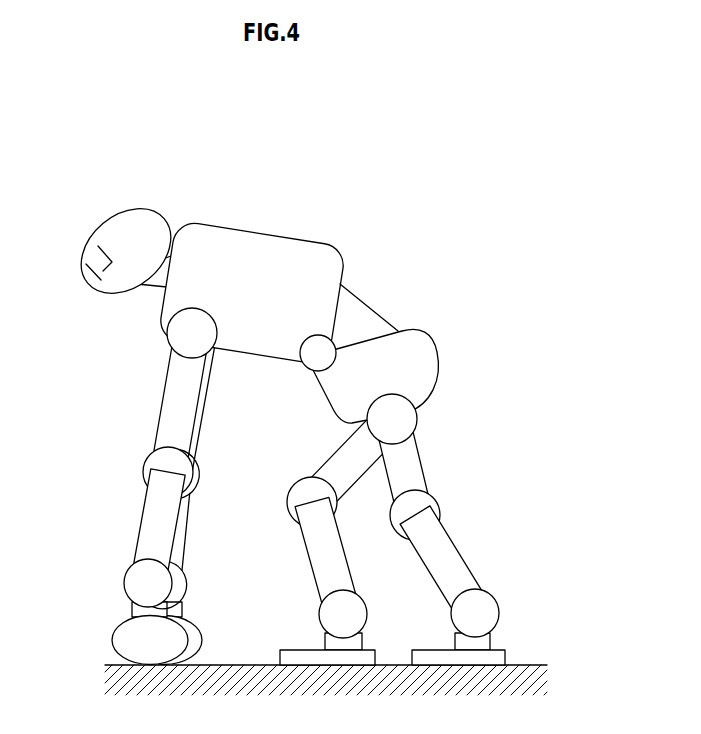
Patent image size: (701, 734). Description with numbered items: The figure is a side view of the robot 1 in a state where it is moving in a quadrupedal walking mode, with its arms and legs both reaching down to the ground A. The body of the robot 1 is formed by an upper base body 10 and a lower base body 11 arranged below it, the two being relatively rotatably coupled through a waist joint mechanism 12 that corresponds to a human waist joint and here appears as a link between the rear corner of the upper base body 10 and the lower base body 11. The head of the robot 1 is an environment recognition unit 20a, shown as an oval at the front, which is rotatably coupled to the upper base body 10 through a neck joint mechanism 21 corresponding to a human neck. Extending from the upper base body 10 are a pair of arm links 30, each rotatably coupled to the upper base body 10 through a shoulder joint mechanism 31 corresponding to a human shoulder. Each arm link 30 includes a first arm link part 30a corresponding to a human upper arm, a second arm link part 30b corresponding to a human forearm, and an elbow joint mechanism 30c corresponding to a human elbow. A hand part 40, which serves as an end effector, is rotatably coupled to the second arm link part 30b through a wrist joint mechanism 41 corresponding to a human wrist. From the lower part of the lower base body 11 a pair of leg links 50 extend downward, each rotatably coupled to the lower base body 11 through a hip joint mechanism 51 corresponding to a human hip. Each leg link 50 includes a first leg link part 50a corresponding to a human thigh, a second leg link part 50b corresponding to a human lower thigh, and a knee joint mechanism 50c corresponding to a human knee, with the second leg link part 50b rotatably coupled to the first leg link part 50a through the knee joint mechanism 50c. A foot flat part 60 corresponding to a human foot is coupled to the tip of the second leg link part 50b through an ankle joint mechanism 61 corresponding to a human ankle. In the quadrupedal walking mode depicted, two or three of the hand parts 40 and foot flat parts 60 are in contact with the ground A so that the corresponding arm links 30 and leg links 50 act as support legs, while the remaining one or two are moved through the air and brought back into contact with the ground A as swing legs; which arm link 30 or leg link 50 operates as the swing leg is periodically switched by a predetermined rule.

The robot 1 is at (290, 397).
The upper base body 10 is at (222, 225).
The lower base body 11 is at (421, 331).
The waist joint mechanism 12 is at (366, 305).
The environment recognition unit 20a is at (139, 209).
The neck joint mechanism 21 is at (148, 294).
The arm link 30 is at (153, 458).
The first arm link part 30a is at (166, 441).
The second arm link part 30b is at (157, 527).
The elbow joint mechanism 30c is at (155, 472).
The shoulder joint mechanism 31 is at (192, 342).
The hand part 40 is at (121, 633).
The wrist joint mechanism 41 is at (143, 583).
The leg link 50 is at (386, 476).
The first leg link part 50a is at (340, 468).
The second leg link part 50b is at (312, 540).
The knee joint mechanism 50c is at (307, 500).
The hip joint mechanism 51 is at (403, 420).
The foot flat part 60 is at (303, 649).
The ankle joint mechanism 61 is at (327, 612).
The ground A is at (542, 664).